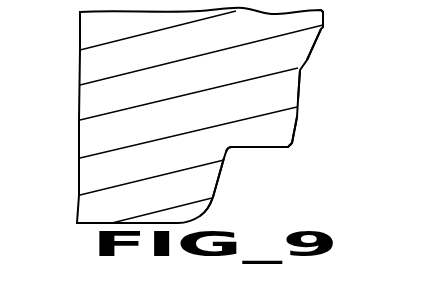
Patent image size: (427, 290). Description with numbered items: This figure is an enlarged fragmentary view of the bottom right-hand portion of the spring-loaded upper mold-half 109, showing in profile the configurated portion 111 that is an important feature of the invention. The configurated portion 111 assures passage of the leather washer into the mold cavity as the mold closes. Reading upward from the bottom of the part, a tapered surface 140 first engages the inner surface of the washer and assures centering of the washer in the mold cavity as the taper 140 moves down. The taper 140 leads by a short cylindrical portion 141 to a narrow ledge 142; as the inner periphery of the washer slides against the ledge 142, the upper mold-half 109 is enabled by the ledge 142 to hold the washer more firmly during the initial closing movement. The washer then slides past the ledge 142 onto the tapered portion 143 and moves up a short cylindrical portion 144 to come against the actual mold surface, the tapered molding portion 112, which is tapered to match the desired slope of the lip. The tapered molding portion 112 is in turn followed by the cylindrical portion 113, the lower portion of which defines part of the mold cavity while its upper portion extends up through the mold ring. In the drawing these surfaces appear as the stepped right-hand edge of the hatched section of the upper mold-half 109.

The upper mold-half 109 is at (94, 102).
The cylindrical portion 113 is at (323, 17).
The tapered molding portion 112 is at (313, 47).
The short cylindrical portion 144 is at (298, 88).
The tapered portion 143 is at (295, 127).
The configurated portion 111 is at (284, 150).
The narrow ledge 142 is at (277, 149).
The short cylindrical portion 141 is at (224, 161).
The tapered surface 140 is at (209, 203).